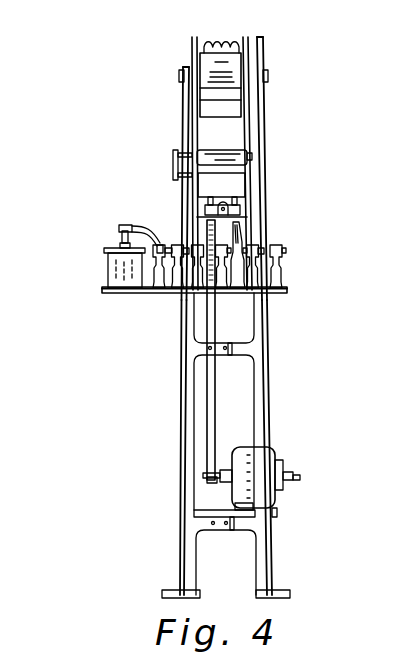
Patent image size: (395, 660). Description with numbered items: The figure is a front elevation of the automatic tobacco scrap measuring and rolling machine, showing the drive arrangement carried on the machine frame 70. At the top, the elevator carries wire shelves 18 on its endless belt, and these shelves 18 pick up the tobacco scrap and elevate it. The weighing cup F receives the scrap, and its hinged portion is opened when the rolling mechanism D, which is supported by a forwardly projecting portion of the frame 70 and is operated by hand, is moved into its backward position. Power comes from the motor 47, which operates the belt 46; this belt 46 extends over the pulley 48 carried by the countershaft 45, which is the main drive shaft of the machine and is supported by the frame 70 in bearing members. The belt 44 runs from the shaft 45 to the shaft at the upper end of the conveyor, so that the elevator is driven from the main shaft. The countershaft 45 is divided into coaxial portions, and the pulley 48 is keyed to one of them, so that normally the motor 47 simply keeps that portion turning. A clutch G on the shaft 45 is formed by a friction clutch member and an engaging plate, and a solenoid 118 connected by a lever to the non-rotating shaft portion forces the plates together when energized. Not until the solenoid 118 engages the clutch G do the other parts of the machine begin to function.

The wire shelves 18 is at (213, 43).
The pulley 48 is at (182, 115).
The belt 44 is at (265, 113).
The rolling mechanism D is at (264, 148).
The weighing cup F is at (207, 186).
The clutch G is at (240, 240).
The countershaft 45 is at (283, 250).
The solenoid 118 is at (106, 268).
The frame 70 is at (265, 376).
The belt 46 is at (207, 409).
The motor 47 is at (276, 450).